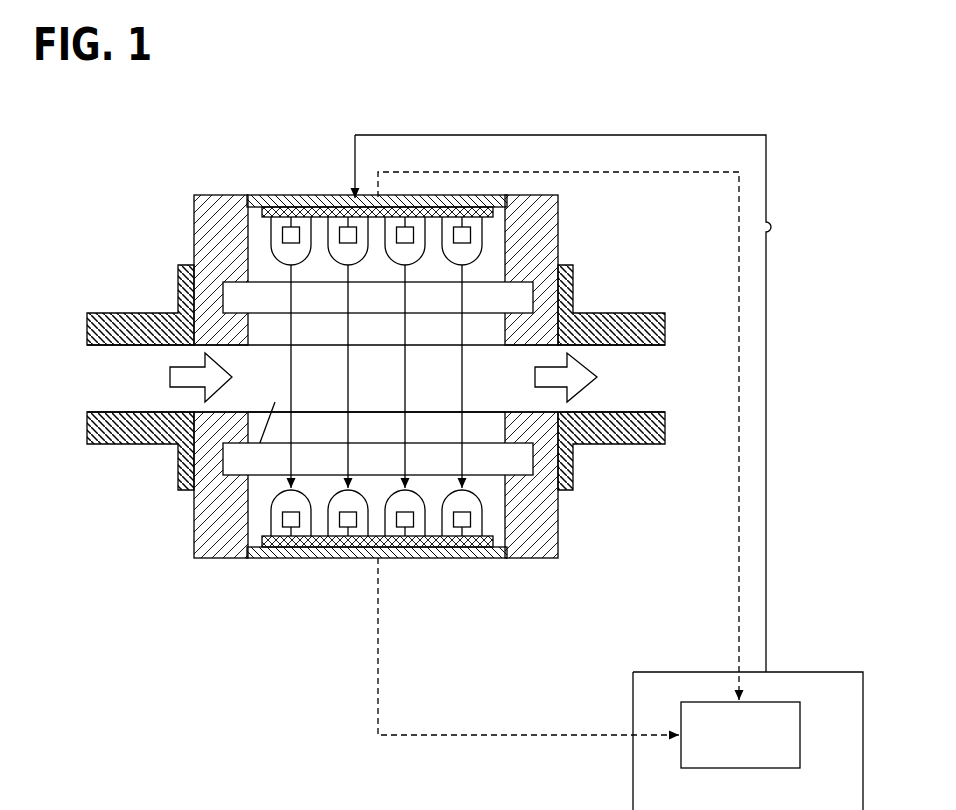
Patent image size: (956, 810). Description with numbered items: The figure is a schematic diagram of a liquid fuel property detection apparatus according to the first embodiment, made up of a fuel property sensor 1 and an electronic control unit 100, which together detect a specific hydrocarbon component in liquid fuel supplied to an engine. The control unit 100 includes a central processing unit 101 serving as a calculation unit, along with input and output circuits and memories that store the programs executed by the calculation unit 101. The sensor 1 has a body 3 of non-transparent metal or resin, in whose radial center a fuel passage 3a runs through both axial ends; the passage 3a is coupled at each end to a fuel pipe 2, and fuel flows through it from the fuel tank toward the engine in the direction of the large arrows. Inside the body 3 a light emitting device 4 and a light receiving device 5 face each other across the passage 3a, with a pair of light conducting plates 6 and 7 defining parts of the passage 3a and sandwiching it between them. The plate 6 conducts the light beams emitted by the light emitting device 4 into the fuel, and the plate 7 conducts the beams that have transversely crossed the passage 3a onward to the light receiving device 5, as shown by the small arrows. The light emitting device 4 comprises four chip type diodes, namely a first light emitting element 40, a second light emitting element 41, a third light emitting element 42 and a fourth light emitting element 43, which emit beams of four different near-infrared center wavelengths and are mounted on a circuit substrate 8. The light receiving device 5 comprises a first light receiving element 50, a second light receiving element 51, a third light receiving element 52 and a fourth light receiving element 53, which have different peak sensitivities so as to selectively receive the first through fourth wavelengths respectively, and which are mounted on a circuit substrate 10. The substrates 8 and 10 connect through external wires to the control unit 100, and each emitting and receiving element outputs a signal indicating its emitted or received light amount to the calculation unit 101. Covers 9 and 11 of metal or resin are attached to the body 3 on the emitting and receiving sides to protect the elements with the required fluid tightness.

The fuel property sensor 1 is at (178, 178).
The fuel pipe 2 is at (150, 318).
The body 3 is at (206, 214).
The fuel passage 3a is at (248, 478).
The light emitting device 4 is at (439, 314).
The light receiving device 5 is at (456, 553).
The light conducting plate 6 is at (483, 328).
The light conducting plate 7 is at (493, 430).
The circuit substrate 8 is at (322, 210).
The cover 9 is at (291, 200).
The circuit substrate 10 is at (256, 553).
The cover 11 is at (278, 548).
The first light emitting element 40 is at (286, 230).
The second light emitting element 41 is at (345, 230).
The third light emitting element 42 is at (405, 230).
The fourth light emitting element 43 is at (462, 230).
The first light receiving element 50 is at (291, 530).
The second light receiving element 51 is at (348, 530).
The third light receiving element 52 is at (405, 530).
The fourth light receiving element 53 is at (462, 530).
The electronic control unit 100 is at (847, 672).
The central processing unit 101 is at (777, 702).